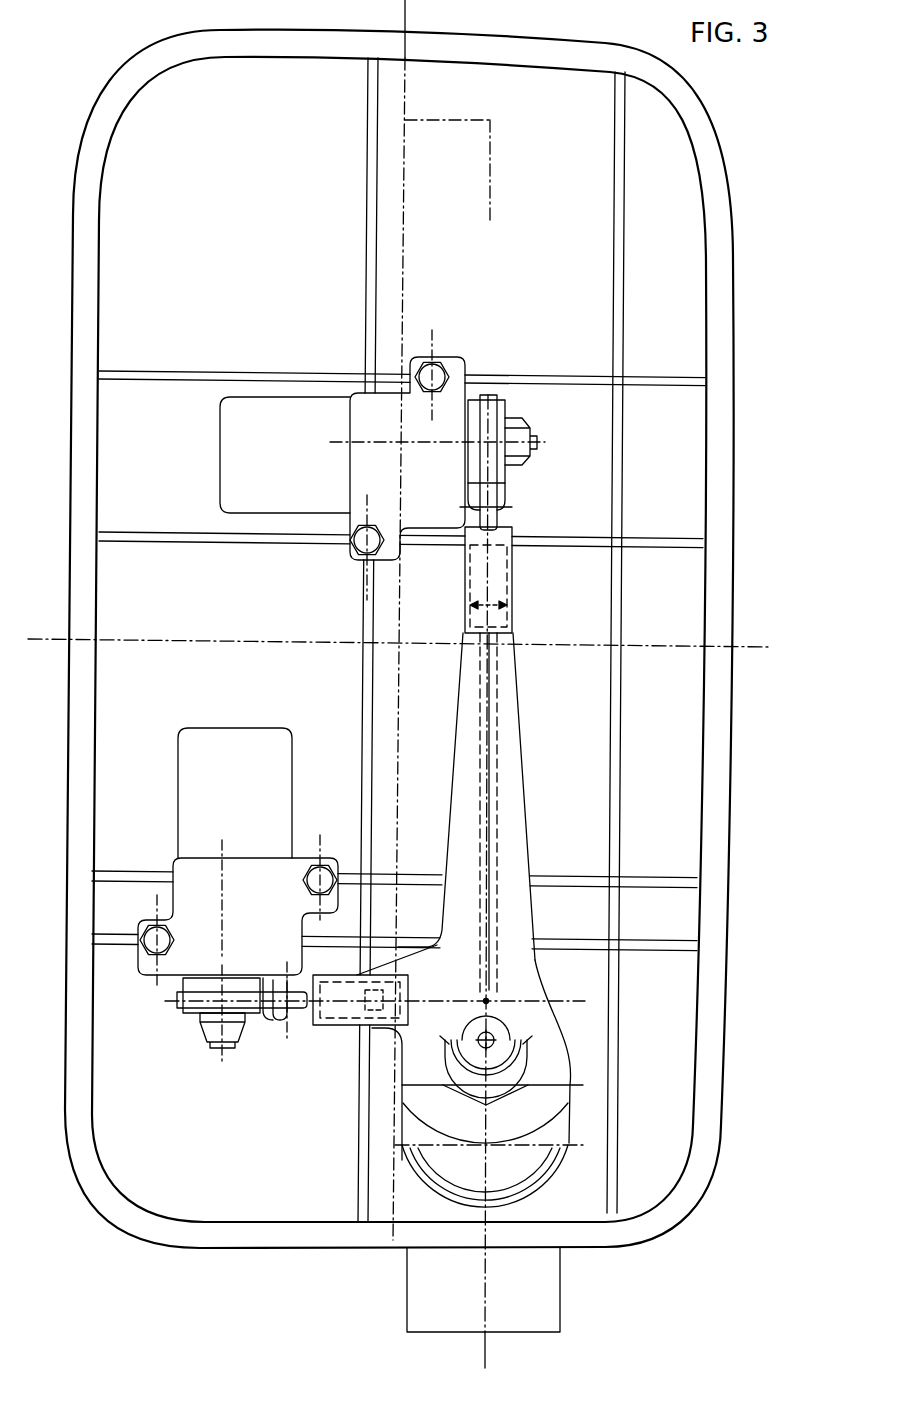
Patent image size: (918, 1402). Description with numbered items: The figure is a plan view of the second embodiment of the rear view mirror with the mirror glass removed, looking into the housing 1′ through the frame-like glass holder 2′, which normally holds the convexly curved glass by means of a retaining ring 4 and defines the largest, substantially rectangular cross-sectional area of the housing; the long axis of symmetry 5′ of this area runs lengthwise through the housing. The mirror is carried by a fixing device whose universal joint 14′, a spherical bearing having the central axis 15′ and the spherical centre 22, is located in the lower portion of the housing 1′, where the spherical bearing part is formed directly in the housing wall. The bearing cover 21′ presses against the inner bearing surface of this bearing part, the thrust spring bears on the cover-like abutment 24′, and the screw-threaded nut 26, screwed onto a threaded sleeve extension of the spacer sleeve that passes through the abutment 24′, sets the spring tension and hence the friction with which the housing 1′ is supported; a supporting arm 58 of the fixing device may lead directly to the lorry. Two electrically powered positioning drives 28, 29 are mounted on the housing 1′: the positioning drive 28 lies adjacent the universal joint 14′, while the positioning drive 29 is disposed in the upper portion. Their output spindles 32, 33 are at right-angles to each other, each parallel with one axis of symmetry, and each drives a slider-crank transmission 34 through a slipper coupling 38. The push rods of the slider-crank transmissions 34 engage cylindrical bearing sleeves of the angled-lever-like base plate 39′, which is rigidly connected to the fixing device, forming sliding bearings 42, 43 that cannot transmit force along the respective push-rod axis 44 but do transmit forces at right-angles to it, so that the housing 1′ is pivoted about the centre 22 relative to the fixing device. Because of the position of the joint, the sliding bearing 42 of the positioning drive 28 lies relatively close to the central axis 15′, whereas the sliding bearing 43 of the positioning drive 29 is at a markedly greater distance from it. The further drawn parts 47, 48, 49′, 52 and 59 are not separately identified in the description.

The housing 1′ is at (738, 222).
The glass holder 2′ is at (725, 297).
The retaining ring 4 is at (419, 12).
The axis of symmetry 5′ is at (405, 200).
The universal joint 14′ is at (411, 1188).
The central axis 15′ is at (483, 1228).
The bearing cover 21′ is at (520, 1170).
The spherical centre 22 is at (486, 1001).
The cover-like abutment 24′ is at (525, 1118).
The screw-threaded nut 26 is at (583, 1085).
The positioning drive 28 is at (167, 816).
The positioning drive 29 is at (205, 464).
The output spindle 32 is at (228, 980).
The output spindle 33 is at (488, 395).
The slider-crank transmission 34 is at (522, 518).
The slipper coupling 38 is at (500, 408).
The base plate 39′ is at (518, 812).
The sliding bearing 42 is at (329, 1040).
The sliding bearing 43 is at (527, 578).
The axis 44 is at (488, 578).
The rod 47 is at (490, 737).
The plate 48 is at (553, 1005).
The frame crossbar 49′ is at (658, 543).
The hex nut 52 is at (433, 368).
The supporting arm 58 is at (440, 1297).
The bracket 59 is at (362, 400).